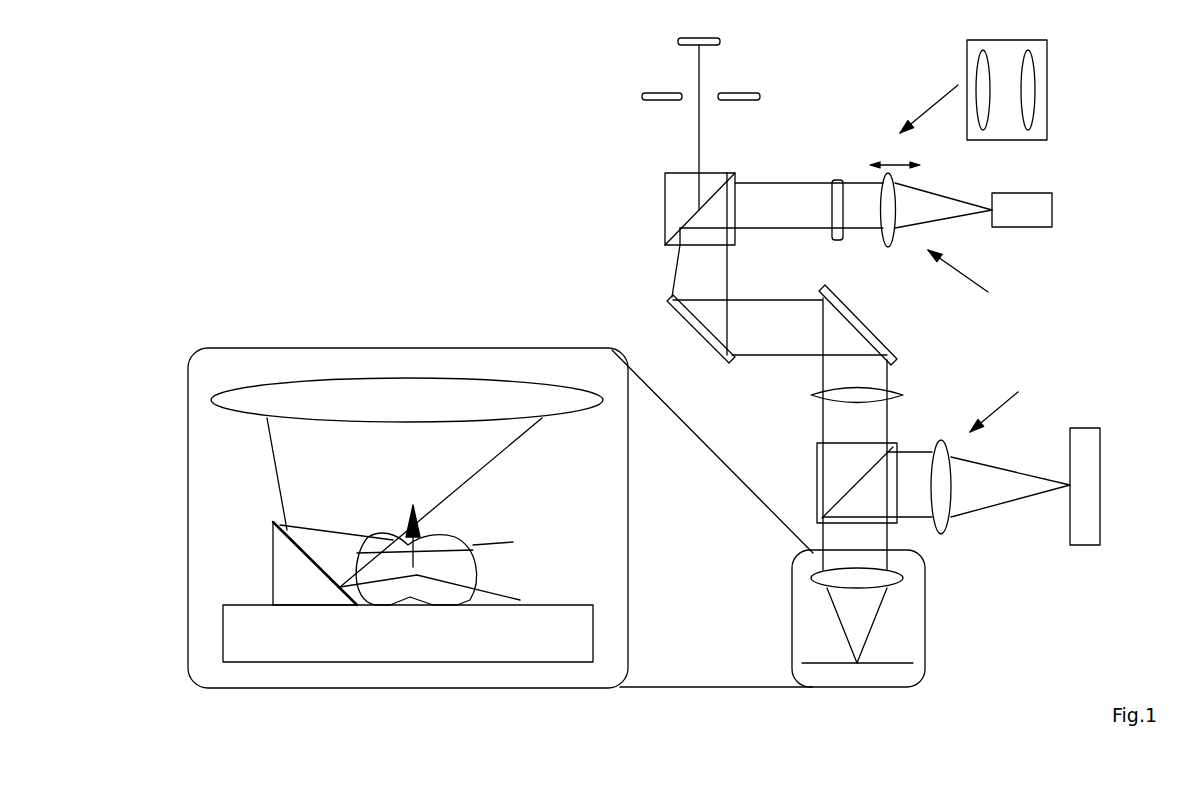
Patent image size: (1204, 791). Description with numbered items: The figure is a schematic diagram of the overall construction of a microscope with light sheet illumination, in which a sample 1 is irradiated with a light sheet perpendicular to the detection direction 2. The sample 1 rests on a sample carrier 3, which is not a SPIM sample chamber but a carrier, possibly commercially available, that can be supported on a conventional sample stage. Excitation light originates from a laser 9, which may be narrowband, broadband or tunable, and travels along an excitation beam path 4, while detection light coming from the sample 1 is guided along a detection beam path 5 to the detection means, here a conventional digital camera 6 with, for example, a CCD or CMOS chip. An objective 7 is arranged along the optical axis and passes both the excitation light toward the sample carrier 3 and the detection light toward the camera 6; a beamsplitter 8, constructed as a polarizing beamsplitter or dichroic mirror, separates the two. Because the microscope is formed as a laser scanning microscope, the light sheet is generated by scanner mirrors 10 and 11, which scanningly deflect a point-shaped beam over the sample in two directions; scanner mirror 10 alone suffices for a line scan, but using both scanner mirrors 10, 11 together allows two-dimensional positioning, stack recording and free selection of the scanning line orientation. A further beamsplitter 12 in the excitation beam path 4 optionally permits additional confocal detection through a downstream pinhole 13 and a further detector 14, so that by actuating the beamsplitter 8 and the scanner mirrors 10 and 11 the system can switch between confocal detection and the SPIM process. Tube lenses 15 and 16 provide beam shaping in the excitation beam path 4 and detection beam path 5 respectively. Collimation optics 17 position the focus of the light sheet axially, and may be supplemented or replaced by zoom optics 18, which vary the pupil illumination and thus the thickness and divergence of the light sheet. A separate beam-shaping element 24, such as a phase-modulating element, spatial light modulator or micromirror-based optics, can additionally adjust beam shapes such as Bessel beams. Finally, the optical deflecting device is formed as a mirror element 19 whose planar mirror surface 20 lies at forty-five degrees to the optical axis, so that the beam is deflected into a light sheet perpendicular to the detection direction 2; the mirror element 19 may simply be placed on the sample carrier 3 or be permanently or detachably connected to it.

The sample 1 is at (473, 577).
The detection direction 2 is at (432, 530).
The sample carrier 3 is at (583, 643).
The excitation beam path 4 is at (966, 279).
The detection beam path 5 is at (1002, 400).
The digital camera 6 is at (1085, 542).
The objective 7 is at (893, 578).
The beamsplitter 8 is at (827, 475).
The laser 9 is at (1042, 223).
The scanner mirror 10 is at (690, 313).
The scanner mirror 11 is at (877, 337).
The further beamsplitter 12 is at (672, 217).
The pinhole 13 is at (652, 100).
The further detector 14 is at (678, 42).
The tube lens 15 is at (813, 397).
The tube lens 16 is at (940, 523).
The collimation optics 17 is at (882, 180).
The zoom optics 18 is at (1045, 100).
The mirror element 19 is at (287, 597).
The mirror surface 20 is at (290, 533).
The beam-shaping element 24 is at (835, 183).